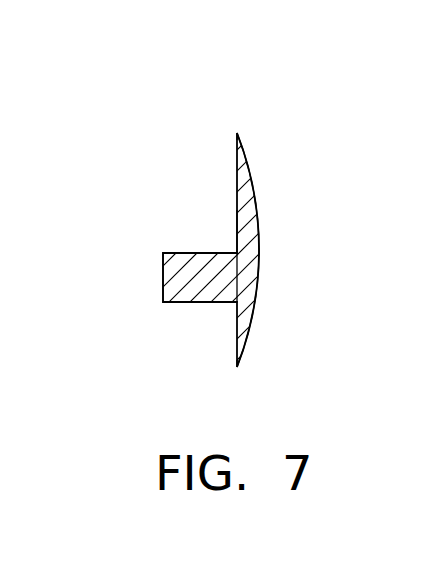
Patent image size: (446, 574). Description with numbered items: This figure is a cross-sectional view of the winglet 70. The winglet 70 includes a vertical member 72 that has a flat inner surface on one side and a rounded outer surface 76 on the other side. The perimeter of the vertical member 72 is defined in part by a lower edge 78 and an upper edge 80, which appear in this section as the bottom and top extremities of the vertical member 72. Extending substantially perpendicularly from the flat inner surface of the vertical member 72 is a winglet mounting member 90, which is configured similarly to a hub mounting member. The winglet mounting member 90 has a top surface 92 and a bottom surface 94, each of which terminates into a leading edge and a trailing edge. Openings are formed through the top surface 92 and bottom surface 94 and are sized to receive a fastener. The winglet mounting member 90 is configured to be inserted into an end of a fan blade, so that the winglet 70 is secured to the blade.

The winglet 70 is at (303, 125).
The vertical member 72 is at (246, 214).
The rounded outer surface 76 is at (260, 273).
The lower edge 78 is at (237, 367).
The upper edge 80 is at (237, 128).
The winglet mounting member 90 is at (188, 280).
The top surface 92 is at (212, 252).
The bottom surface 94 is at (200, 303).